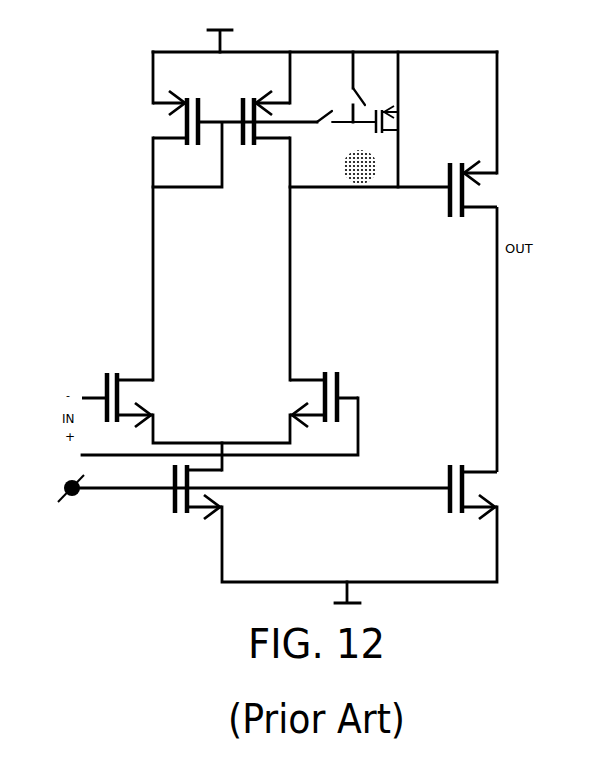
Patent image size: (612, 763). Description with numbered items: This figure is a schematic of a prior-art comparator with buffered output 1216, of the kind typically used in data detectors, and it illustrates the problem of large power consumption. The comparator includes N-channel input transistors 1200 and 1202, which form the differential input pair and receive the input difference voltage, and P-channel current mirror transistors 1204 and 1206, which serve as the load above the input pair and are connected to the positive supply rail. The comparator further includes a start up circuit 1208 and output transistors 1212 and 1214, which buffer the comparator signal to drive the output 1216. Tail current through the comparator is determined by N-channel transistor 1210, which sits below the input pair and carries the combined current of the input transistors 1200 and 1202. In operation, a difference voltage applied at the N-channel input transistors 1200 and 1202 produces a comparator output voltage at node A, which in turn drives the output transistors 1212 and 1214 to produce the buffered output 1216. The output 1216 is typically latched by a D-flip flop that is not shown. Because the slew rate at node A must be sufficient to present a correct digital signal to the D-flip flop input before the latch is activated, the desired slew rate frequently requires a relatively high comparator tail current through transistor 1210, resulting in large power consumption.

The N-channel input transistor 1200 is at (102, 388).
The N-channel input transistor 1202 is at (340, 386).
The P-channel current mirror transistor 1204 is at (152, 135).
The P-channel current mirror transistor 1206 is at (269, 144).
The start up circuit 1208 is at (410, 115).
The N-channel transistor 1210 is at (168, 500).
The output transistor 1212 is at (436, 204).
The output transistor 1214 is at (447, 502).
The buffered output 1216 is at (500, 324).